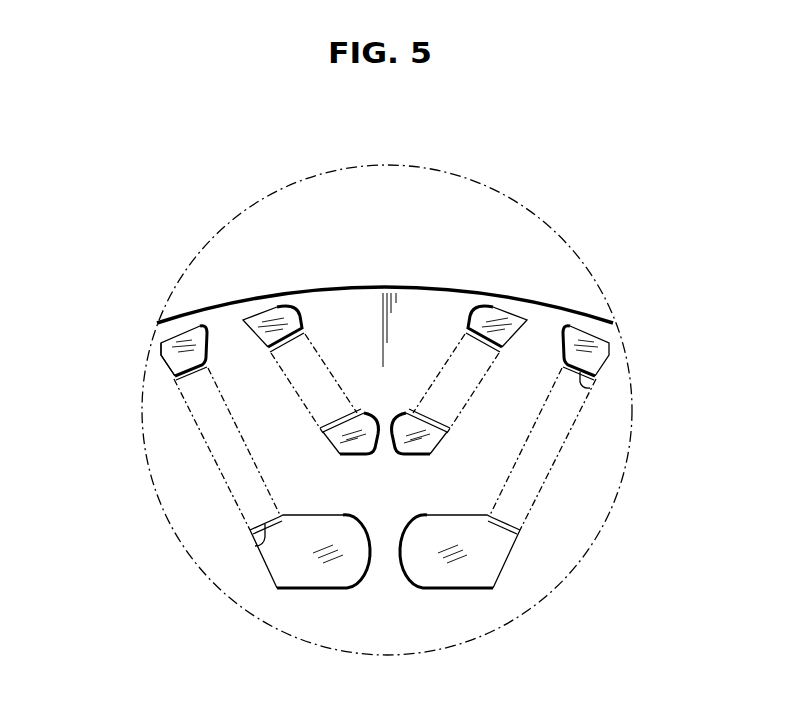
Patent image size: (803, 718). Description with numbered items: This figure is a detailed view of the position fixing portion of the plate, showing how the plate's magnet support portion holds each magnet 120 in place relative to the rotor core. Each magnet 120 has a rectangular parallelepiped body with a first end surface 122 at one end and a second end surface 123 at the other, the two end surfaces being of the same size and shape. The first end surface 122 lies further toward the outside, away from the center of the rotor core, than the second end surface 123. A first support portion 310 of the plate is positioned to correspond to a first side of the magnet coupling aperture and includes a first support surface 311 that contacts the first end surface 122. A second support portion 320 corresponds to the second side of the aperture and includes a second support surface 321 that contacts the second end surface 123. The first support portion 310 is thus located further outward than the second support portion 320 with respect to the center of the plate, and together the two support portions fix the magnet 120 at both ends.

The magnet 120 is at (217, 444).
The first end surface 122 is at (183, 364).
The second end surface 123 is at (262, 531).
The first support portion 310 is at (262, 318).
The first support surface 311 is at (590, 388).
The second support portion 320 is at (341, 449).
The second support surface 321 is at (498, 522).